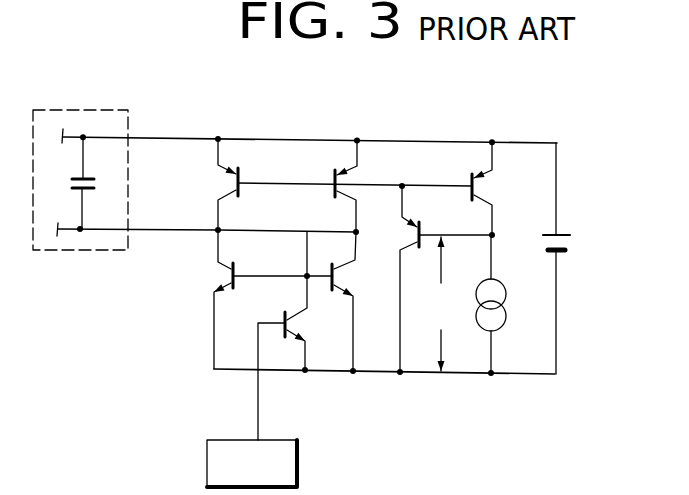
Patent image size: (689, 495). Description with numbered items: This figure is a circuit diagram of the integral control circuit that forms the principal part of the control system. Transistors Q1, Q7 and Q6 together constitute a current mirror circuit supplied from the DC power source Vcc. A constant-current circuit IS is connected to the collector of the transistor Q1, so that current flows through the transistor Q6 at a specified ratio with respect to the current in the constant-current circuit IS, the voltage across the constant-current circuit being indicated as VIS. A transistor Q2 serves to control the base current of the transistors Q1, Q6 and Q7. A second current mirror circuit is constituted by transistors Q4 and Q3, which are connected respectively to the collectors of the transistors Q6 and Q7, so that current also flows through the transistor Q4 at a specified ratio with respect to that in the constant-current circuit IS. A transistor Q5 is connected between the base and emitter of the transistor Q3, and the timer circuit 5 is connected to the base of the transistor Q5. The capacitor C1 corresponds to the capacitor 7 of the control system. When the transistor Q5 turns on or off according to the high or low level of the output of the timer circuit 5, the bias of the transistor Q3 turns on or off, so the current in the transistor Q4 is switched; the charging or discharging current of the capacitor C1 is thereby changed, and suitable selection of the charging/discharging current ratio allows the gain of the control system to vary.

The capacitor C1 is at (72, 181).
The capacitor 7 is at (90, 252).
The transistor Q1 is at (468, 176).
The transistor Q2 is at (407, 233).
The transistor Q3 is at (345, 278).
The transistor Q4 is at (226, 276).
The transistor Q5 is at (296, 318).
The transistor Q6 is at (227, 182).
The transistor Q7 is at (340, 174).
The constant-current circuit IS is at (500, 290).
The voltage across current source VIS is at (439, 304).
The DC power source Vcc is at (568, 249).
The timer circuit 5 is at (297, 462).